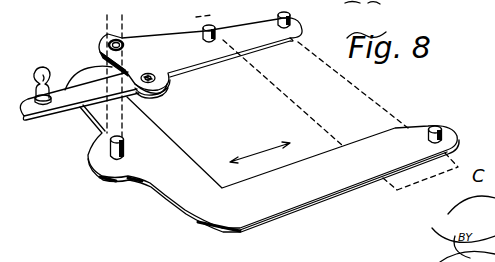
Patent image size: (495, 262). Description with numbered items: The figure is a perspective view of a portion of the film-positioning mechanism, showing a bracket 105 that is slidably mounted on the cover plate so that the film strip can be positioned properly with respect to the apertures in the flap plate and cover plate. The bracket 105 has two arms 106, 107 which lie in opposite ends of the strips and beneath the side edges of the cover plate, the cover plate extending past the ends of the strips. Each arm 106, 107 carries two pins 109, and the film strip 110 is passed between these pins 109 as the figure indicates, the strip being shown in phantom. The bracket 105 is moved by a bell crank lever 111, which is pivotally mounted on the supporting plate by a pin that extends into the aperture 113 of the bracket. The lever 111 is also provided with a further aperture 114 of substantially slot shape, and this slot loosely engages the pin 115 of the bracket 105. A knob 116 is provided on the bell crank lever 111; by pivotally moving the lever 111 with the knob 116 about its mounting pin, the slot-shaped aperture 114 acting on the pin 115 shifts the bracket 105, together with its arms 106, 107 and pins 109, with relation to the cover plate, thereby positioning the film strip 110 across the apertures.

The bracket 105 is at (186, 212).
The arm 106 is at (186, 56).
The arm 107 is at (323, 192).
The pins 109 is at (278, 17).
The film strip 110 is at (378, 101).
The bell crank lever 111 is at (151, 93).
The aperture 113 is at (168, 75).
The aperture 114 is at (109, 40).
The pin 115 is at (125, 142).
The knob 116 is at (41, 68).